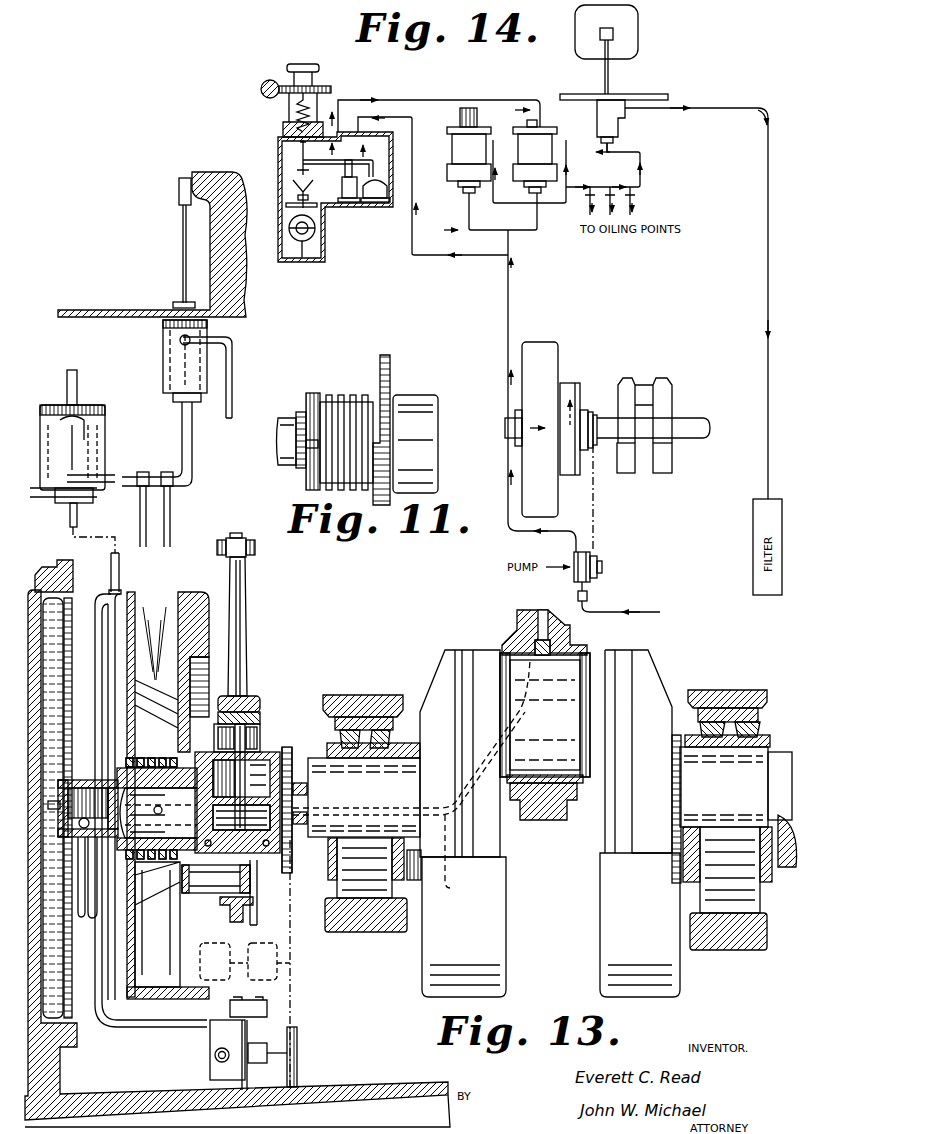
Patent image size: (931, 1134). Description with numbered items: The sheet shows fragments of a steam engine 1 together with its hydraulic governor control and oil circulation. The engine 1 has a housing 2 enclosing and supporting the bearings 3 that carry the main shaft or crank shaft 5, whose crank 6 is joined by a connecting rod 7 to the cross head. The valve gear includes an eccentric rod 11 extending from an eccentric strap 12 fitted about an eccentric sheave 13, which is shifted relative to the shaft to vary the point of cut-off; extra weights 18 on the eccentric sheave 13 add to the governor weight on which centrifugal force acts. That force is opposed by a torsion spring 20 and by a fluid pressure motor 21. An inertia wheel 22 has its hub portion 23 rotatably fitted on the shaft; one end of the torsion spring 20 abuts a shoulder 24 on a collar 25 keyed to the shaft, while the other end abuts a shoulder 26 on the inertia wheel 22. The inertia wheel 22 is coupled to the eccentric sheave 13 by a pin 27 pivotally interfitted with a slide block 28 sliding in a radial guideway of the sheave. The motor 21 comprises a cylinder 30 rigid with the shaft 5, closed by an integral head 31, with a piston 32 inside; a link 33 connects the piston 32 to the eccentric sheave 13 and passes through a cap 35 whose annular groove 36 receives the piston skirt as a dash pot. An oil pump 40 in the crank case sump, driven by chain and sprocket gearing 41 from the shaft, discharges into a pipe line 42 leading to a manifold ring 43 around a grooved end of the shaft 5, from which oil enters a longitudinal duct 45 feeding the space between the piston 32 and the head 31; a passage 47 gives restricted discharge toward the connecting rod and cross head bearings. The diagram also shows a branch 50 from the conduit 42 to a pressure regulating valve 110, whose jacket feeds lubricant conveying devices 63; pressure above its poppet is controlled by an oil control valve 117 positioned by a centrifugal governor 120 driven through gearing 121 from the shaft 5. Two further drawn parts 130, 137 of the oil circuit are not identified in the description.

In FIG. 13, the steam engine 1 is at (505, 638).
In FIG. 13, the housing 2 is at (118, 1100).
In FIG. 13, the bearings 3 is at (368, 692).
In FIG. 14, the crank shaft 5 is at (700, 425).
In FIG. 11, the crank shaft 5 is at (289, 413).
In FIG. 13, the crank shaft 5 is at (385, 791).
In FIG. 14, the crank 6 is at (645, 383).
In FIG. 13, the crank 6 is at (538, 735).
In FIG. 13, the connecting rod 7 is at (540, 612).
In FIG. 13, the eccentric rod 11 is at (248, 648).
In FIG. 14, the eccentric strap 12 is at (568, 395).
In FIG. 13, the eccentric strap 12 is at (252, 696).
In FIG. 14, the eccentric sheave 13 is at (584, 396).
In FIG. 13, the eccentric sheave 13 is at (260, 712).
In FIG. 13, the extra weights 18 is at (290, 963).
In FIG. 11, the torsion spring 20 is at (352, 395).
In FIG. 13, the torsion spring 20 is at (152, 860).
In FIG. 13, the fluid pressure motor 21 is at (270, 760).
In FIG. 14, the inertia wheel 22 is at (531, 429).
In FIG. 11, the inertia wheel 22 is at (387, 372).
In FIG. 13, the inertia wheel 22 is at (184, 593).
In FIG. 11, the hub portion 23 is at (340, 490).
In FIG. 13, the hub portion 23 is at (157, 758).
In FIG. 11, the shoulder 24 is at (318, 446).
In FIG. 11, the collar 25 is at (308, 421).
In FIG. 13, the collar 25 is at (108, 786).
In FIG. 11, the shoulder 26 is at (382, 440).
In FIG. 13, the pin 27 is at (203, 884).
In FIG. 13, the slide block 28 is at (213, 913).
In FIG. 13, the cylinder 30 is at (300, 792).
In FIG. 13, the integral head 31 is at (265, 860).
In FIG. 13, the piston 32 is at (300, 817).
In FIG. 13, the link 33 is at (243, 760).
In FIG. 13, the cap 35 is at (205, 752).
In FIG. 13, the annular groove 36 is at (292, 750).
In FIG. 14, the oil pump 40 is at (595, 552).
In FIG. 13, the oil pump 40 is at (210, 1052).
In FIG. 14, the chain and sprocket gearing 41 is at (596, 508).
In FIG. 13, the chain and sprocket gearing 41 is at (292, 1015).
In FIG. 14, the pipe line 42 is at (509, 532).
In FIG. 13, the pipe line 42 is at (82, 865).
In FIG. 13, the manifold ring 43 is at (70, 781).
In FIG. 13, the longitudinal duct 45 is at (172, 814).
In FIG. 13, the passage 47 is at (411, 781).
In FIG. 14, the branch 50 is at (512, 326).
In FIG. 13, the branch 50 is at (121, 575).
In FIG. 14, the lubricant conveying devices 63 is at (632, 198).
In FIG. 14, the pressure regulating valve 110 is at (545, 173).
In FIG. 14, the oil control valve 117 is at (348, 198).
In FIG. 14, the centrifugal governor 120 is at (295, 184).
In FIG. 14, the gearing 121 is at (310, 262).
In FIG. 14, the oil cup 130 is at (455, 150).
In FIG. 14, the valve 137 is at (378, 188).